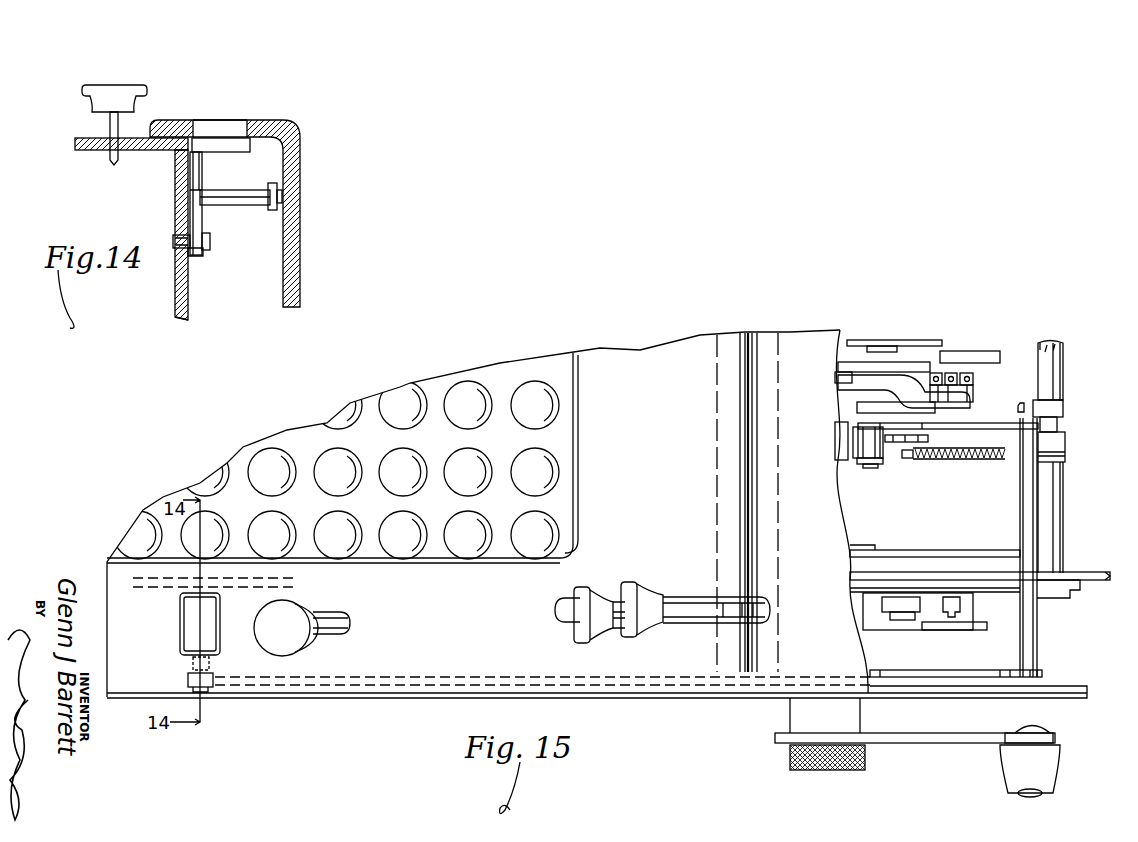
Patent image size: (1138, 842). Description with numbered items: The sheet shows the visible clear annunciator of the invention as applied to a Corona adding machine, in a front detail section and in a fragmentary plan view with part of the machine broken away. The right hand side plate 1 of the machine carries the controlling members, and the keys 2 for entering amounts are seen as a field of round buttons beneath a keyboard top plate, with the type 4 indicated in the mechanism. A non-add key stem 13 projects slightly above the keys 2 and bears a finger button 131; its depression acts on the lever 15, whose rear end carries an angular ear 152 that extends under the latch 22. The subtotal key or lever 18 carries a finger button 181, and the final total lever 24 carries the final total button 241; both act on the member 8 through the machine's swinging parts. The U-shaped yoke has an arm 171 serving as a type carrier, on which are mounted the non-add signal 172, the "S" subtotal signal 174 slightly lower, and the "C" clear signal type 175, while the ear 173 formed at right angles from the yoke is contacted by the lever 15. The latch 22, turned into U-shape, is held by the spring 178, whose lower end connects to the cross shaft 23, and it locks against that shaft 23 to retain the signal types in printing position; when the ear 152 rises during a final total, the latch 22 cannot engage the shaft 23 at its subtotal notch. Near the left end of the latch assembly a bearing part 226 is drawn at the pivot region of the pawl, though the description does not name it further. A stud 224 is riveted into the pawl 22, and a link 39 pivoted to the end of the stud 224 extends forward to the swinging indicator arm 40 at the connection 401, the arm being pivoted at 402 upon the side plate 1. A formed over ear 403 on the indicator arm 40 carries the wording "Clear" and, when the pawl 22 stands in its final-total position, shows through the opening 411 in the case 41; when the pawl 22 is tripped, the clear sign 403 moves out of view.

In FIG. 14, the right hand side plate 1 is at (190, 321).
In FIG. 15, the right hand side plate 1 is at (1090, 582).
In FIG. 14, the keys 2 is at (106, 90).
In FIG. 15, the keys 2 is at (135, 540).
In FIG. 15, the type 4 is at (1000, 360).
In FIG. 15, the member 8 is at (874, 627).
In FIG. 15, the non-add key stem 13 is at (333, 634).
In FIG. 15, the lever 15 is at (930, 550).
In FIG. 15, the subtotal key or lever 18 is at (678, 618).
In FIG. 15, the latch 22 is at (950, 430).
In FIG. 15, the shaft 23 is at (1058, 425).
In FIG. 15, the final total lever 24 is at (697, 607).
In FIG. 14, the link 39 is at (276, 210).
In FIG. 15, the link 39 is at (958, 670).
In FIG. 14, the indicator arm 40 is at (210, 240).
In FIG. 14, the case 41 is at (299, 183).
In FIG. 15, the case 41 is at (370, 698).
In FIG. 15, the finger button 131 is at (257, 632).
In FIG. 15, the angular ear 152 is at (1018, 409).
In FIG. 15, the arm 171 is at (914, 404).
In FIG. 15, the non-add signal 172 is at (952, 372).
In FIG. 15, the ear 173 is at (936, 372).
In FIG. 15, the subtotal signal 174 is at (968, 372).
In FIG. 15, the clear signal type 175 is at (974, 386).
In FIG. 15, the spring 178 is at (965, 460).
In FIG. 15, the finger button 181 is at (598, 588).
In FIG. 15, the stud 224 is at (1022, 498).
In FIG. 15, the bearing block 226 is at (872, 468).
In FIG. 15, the final total button 241 is at (646, 597).
In FIG. 14, the connection point 401 is at (236, 205).
In FIG. 14, the pivot 402 is at (205, 255).
In FIG. 14, the formed over ear 403 is at (213, 138).
In FIG. 15, the formed over ear 403 is at (196, 629).
In FIG. 14, the opening 411 is at (240, 130).
In FIG. 15, the opening 411 is at (179, 619).